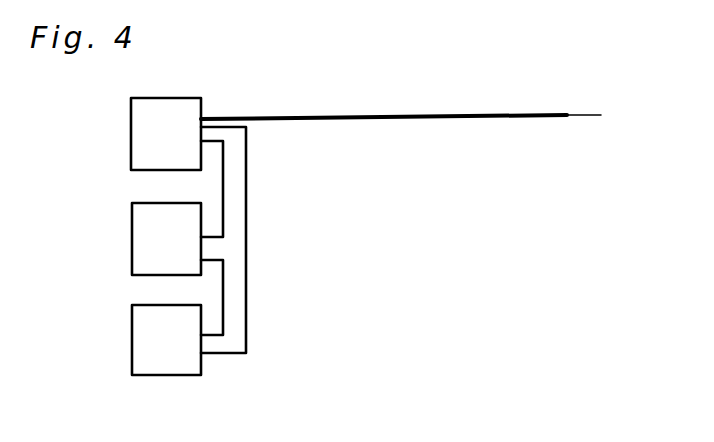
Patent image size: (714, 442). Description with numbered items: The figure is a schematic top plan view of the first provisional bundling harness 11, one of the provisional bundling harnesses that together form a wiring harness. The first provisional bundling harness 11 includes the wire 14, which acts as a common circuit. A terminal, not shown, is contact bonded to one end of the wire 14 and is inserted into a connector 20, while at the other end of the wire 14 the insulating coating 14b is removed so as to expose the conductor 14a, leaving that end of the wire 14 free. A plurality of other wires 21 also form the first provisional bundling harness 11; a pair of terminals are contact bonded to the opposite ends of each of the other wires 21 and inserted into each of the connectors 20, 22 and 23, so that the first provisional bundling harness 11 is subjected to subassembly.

The connector 20 is at (180, 112).
The other wires 21 is at (223, 273).
The connector 22 is at (134, 247).
The connector 23 is at (134, 348).
The wire 14 is at (472, 112).
The conductor 14a is at (585, 112).
The insulating coating 14b is at (510, 117).
The first provisional bundling harness 11 is at (397, 208).